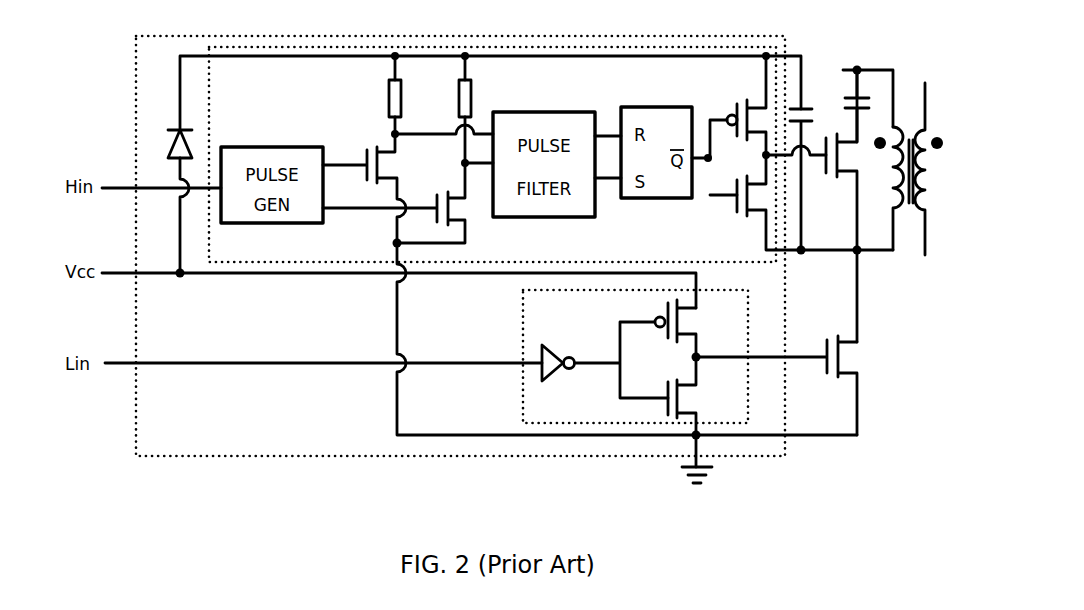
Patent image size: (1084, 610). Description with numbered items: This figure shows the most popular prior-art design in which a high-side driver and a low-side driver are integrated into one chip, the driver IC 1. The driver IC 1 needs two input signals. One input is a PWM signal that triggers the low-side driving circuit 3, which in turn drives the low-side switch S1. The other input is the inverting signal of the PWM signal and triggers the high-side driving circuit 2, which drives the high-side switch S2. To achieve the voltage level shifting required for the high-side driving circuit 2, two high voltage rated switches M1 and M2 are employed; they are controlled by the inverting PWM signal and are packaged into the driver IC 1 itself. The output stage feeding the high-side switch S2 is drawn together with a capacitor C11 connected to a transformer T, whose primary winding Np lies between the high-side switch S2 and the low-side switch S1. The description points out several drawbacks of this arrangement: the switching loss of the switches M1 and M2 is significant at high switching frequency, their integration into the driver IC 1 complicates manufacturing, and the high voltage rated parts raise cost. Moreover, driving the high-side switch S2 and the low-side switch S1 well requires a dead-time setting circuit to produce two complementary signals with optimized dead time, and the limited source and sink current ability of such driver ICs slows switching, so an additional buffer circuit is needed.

The driver IC 1 is at (306, 461).
The high-side driving circuit 2 is at (248, 269).
The low-side driving circuit 3 is at (541, 427).
The high voltage rated switch M1 is at (367, 154).
The high voltage rated switch M2 is at (443, 198).
The low-side switch S1 is at (860, 356).
The high-side switch S2 is at (840, 171).
The capacitor C11 is at (865, 95).
The transformer T is at (909, 158).
The primary winding Np is at (885, 168).